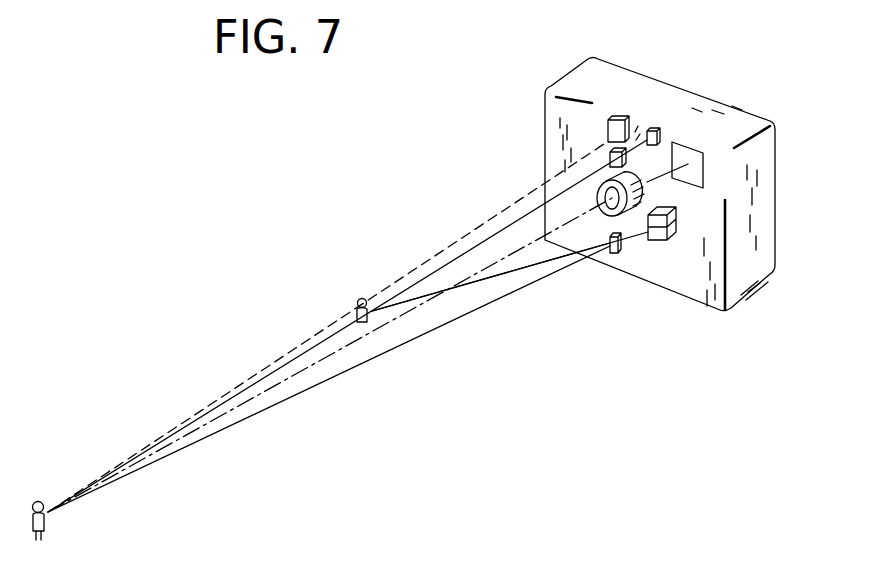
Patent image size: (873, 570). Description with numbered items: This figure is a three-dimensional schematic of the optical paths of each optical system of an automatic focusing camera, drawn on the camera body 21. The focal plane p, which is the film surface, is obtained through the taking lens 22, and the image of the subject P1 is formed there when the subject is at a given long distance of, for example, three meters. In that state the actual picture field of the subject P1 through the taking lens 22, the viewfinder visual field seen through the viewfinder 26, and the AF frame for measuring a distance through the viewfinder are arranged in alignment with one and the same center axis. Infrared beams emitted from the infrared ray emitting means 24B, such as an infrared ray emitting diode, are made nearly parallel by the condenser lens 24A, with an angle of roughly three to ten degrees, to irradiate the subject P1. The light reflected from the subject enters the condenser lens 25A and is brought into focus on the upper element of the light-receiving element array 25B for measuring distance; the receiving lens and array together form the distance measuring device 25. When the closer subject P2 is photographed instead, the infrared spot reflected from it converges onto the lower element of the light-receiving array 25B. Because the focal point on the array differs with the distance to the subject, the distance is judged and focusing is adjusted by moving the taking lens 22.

The camera body 21 is at (758, 228).
The taking lens 22 is at (648, 192).
The condenser lens 24A is at (610, 158).
The infrared ray emitting means 24B is at (660, 134).
The distance measuring device (near) 25 is at (640, 297).
The condenser lens 25A is at (615, 254).
The light-receiving element array 25B is at (660, 241).
The viewfinder 26 is at (621, 115).
The focal plane p is at (703, 162).
The subject P1 is at (35, 507).
The subject P2 is at (364, 300).